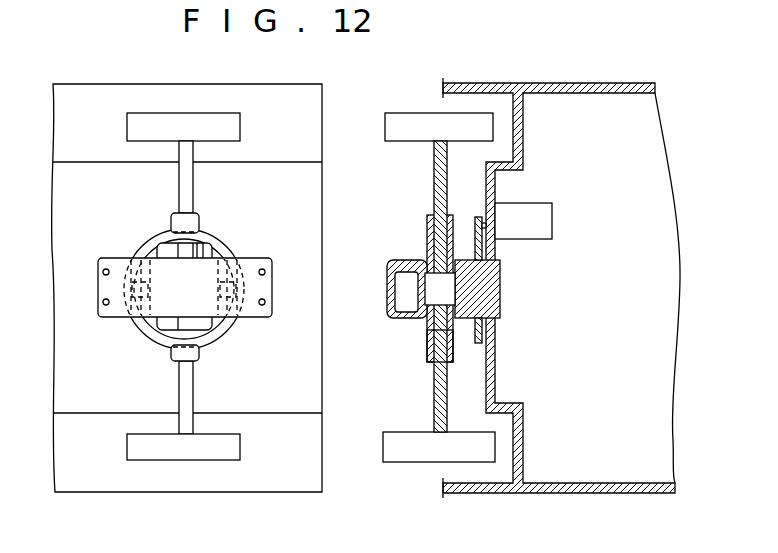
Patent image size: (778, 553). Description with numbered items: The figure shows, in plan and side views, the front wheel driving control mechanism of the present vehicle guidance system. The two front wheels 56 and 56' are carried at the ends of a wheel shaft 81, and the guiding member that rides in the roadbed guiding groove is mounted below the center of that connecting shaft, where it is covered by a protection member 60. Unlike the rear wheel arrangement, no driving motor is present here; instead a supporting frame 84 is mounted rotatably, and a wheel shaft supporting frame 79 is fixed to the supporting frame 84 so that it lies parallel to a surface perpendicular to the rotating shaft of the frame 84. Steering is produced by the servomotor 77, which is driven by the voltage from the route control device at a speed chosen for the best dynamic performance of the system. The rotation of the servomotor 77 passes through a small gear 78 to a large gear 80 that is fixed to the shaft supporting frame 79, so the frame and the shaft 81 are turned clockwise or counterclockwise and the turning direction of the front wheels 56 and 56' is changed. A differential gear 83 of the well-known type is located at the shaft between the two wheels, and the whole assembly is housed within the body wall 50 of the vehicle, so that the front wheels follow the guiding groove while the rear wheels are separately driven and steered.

In FIG. 12B, the housing wall 50 is at (607, 482).
In FIG. 12A, the front wheel 56 is at (211, 128).
In FIG. 12B, the front wheel 56 is at (415, 128).
In FIG. 12A, the front wheel 56' is at (213, 443).
In FIG. 12B, the front wheel 56' is at (413, 443).
In FIG. 12A, the protection member 60 is at (203, 264).
In FIG. 12B, the protection member 60 is at (389, 282).
In FIG. 12B, the servomotor 77 is at (540, 205).
In FIG. 12B, the small gear 78 is at (476, 216).
In FIG. 12A, the wheel shaft supporting frame 79 is at (200, 353).
In FIG. 12B, the wheel shaft supporting frame 79 is at (430, 338).
In FIG. 12A, the large gear 80 is at (228, 252).
In FIG. 12B, the large gear 80 is at (474, 240).
In FIG. 12B, the shaft 81 is at (437, 397).
In FIG. 12B, the differential gear 83 is at (433, 290).
In FIG. 12B, the supporting frame 84 is at (495, 306).